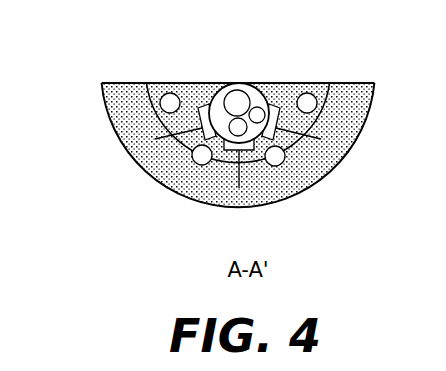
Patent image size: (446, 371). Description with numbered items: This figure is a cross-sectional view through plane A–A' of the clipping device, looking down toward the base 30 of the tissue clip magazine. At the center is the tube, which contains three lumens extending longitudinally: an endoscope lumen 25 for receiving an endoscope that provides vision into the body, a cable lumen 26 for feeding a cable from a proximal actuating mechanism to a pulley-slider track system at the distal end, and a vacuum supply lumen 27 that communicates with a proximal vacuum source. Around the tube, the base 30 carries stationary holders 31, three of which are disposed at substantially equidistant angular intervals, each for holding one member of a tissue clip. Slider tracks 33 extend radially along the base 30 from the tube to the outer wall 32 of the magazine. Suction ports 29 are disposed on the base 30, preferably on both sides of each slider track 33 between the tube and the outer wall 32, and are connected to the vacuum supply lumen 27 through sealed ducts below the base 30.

The endoscope lumen 25 is at (238, 82).
The cable lumen 26 is at (255, 133).
The vacuum supply lumen 27 is at (263, 102).
The suction ports 29 is at (192, 168).
The base 30 is at (187, 88).
The stationary holders 31 is at (199, 113).
The outer wall 32 is at (280, 209).
The slider tracks 33 is at (246, 173).